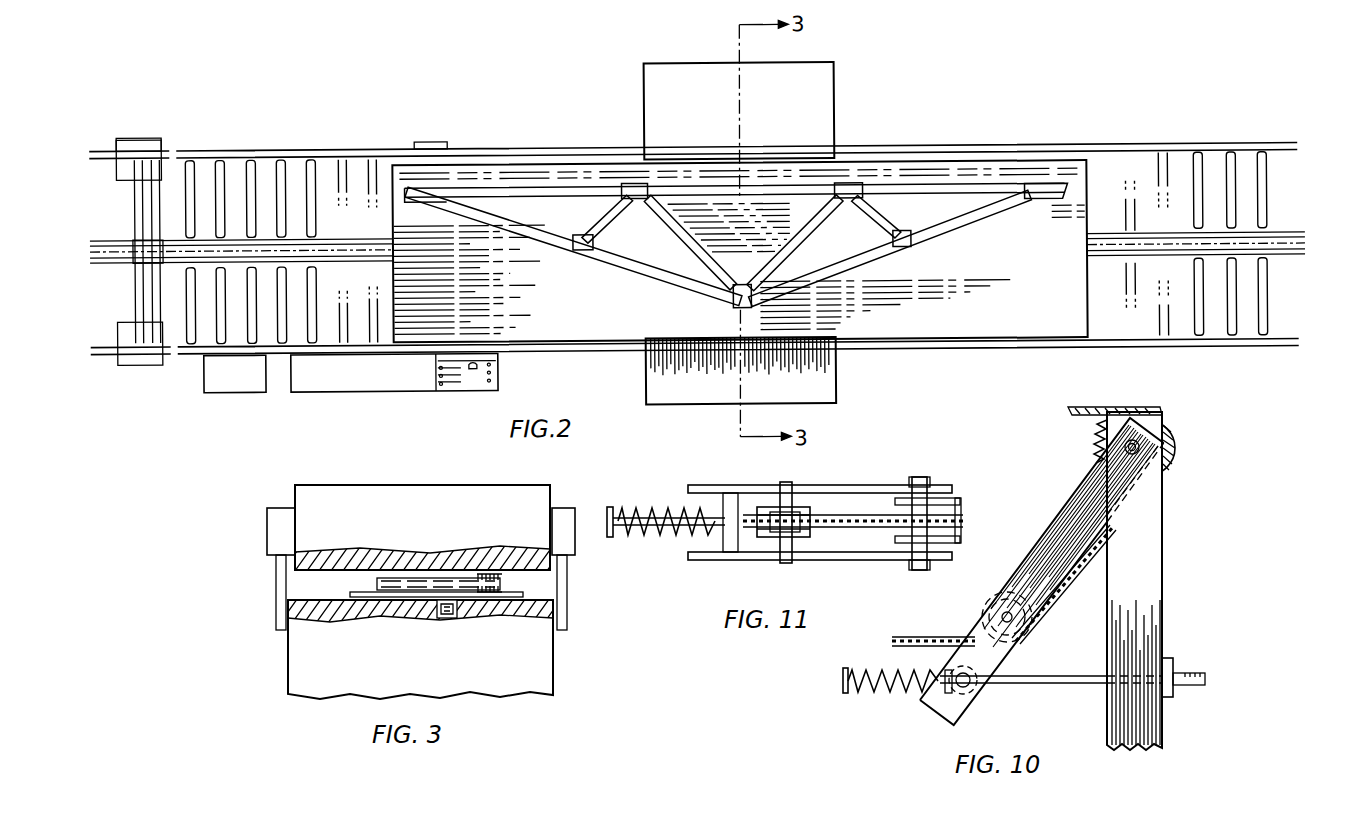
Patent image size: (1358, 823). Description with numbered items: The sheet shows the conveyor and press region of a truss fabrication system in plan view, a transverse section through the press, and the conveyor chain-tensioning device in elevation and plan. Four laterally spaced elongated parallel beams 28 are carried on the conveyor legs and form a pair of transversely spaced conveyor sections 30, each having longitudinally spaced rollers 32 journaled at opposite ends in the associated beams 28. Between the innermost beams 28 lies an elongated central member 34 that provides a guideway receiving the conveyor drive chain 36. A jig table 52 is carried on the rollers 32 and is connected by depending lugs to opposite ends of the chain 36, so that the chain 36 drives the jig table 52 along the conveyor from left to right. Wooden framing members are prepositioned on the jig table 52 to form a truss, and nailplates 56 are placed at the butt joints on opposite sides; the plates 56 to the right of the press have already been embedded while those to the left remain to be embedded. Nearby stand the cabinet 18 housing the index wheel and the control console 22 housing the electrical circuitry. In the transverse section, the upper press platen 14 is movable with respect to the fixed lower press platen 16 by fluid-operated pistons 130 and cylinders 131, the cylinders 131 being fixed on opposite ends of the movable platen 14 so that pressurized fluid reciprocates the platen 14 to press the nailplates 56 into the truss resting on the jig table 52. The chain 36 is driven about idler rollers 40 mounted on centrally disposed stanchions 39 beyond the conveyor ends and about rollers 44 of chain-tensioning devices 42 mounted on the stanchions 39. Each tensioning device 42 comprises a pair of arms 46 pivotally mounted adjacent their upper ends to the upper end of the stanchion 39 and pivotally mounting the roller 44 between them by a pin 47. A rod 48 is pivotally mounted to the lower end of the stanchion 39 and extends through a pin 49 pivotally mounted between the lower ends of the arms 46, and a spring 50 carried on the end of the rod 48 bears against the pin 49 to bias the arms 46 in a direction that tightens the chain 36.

In FIG. 3, the upper press platen 14 is at (430, 526).
In FIG. 3, the lower press platen 16 is at (433, 666).
In FIG. 2, the cabinet 18 is at (236, 394).
In FIG. 2, the control console 22 is at (376, 393).
In FIG. 2, the beams 28 is at (302, 147).
In FIG. 2, the conveyor sections 30 is at (1262, 190).
In FIG. 2, the rollers 32 is at (1258, 176).
In FIG. 2, the central member 34 is at (1288, 242).
In FIG. 2, the conveyor drive chain 36 is at (1300, 256).
In FIG. 10, the stanchions 39 is at (1165, 556).
In FIG. 10, the idler rollers 40 is at (1172, 436).
In FIG. 11, the chain-tensioning device 42 is at (890, 476).
In FIG. 10, the chain-tensioning device 42 is at (1182, 597).
In FIG. 11, the roller 44 is at (773, 537).
In FIG. 10, the roller 44 is at (984, 606).
In FIG. 11, the arms 46 is at (832, 485).
In FIG. 10, the arms 46 is at (1062, 512).
In FIG. 11, the pin 47 is at (925, 495).
In FIG. 10, the pin 47 is at (1004, 585).
In FIG. 11, the rod 48 is at (622, 532).
In FIG. 10, the rod 48 is at (1057, 684).
In FIG. 10, the pin 49 is at (972, 690).
In FIG. 11, the spring 50 is at (678, 530).
In FIG. 10, the spring 50 is at (880, 672).
In FIG. 2, the jig table 52 is at (1093, 169).
In FIG. 3, the jig table 52 is at (350, 589).
In FIG. 2, the nailplates 56 is at (1032, 195).
In FIG. 3, the nailplates 56 is at (505, 580).
In FIG. 3, the pistons 130 is at (274, 586).
In FIG. 3, the cylinders 131 is at (265, 536).